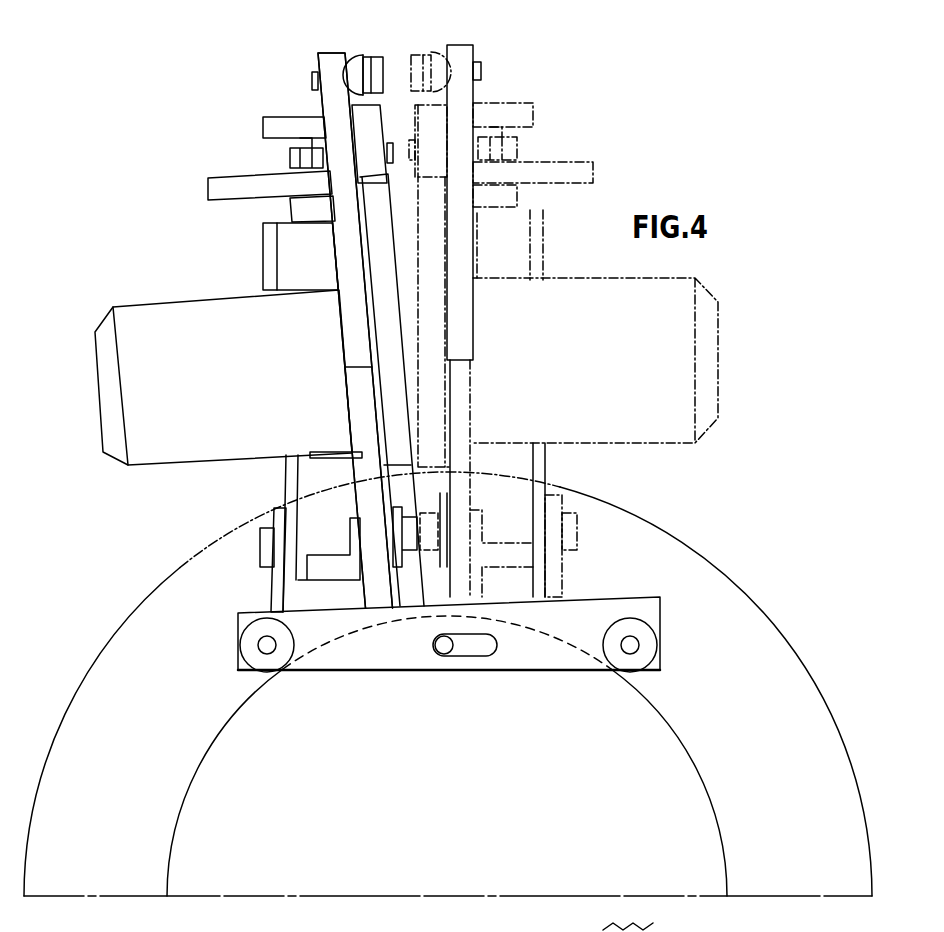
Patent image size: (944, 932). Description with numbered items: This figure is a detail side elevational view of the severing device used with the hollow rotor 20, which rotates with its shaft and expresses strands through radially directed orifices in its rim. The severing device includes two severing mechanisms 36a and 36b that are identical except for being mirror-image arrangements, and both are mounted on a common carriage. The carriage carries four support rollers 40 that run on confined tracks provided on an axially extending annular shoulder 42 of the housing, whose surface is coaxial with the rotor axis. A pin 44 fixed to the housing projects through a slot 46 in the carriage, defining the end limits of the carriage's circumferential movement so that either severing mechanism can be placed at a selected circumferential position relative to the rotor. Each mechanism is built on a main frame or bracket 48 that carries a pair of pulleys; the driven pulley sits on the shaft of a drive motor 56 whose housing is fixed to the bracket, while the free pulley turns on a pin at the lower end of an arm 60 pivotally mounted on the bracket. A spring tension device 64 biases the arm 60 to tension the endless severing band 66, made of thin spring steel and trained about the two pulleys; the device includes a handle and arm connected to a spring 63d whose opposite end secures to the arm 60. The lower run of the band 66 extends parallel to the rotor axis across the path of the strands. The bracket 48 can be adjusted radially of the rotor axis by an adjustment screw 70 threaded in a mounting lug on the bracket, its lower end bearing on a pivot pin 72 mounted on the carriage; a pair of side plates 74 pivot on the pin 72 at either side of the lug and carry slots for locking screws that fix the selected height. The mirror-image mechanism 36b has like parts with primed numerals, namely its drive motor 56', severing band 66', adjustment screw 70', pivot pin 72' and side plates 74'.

The hollow rotor 20 is at (745, 582).
The annular shoulder 42 is at (215, 749).
The support rollers 40 is at (262, 648).
The pin 44 is at (447, 652).
The slot 46 is at (487, 656).
The severing mechanism 36a is at (280, 72).
The severing mechanism 36b is at (566, 90).
The spring tension device 64 is at (350, 45).
The spring 63d is at (366, 55).
The main frame or bracket 48 is at (362, 123).
The adjustment screw 70 is at (280, 210).
The adjustment screw 70' is at (527, 202).
The side plates 74 is at (251, 417).
The side plates 74' is at (571, 403).
The arm 60 is at (342, 243).
The endless severing band 66 is at (392, 390).
The endless severing band 66' is at (471, 286).
The drive motor 56 is at (223, 377).
The drive motor 56' is at (595, 360).
The pivot pin 72 is at (252, 560).
The pivot pin 72' is at (587, 546).